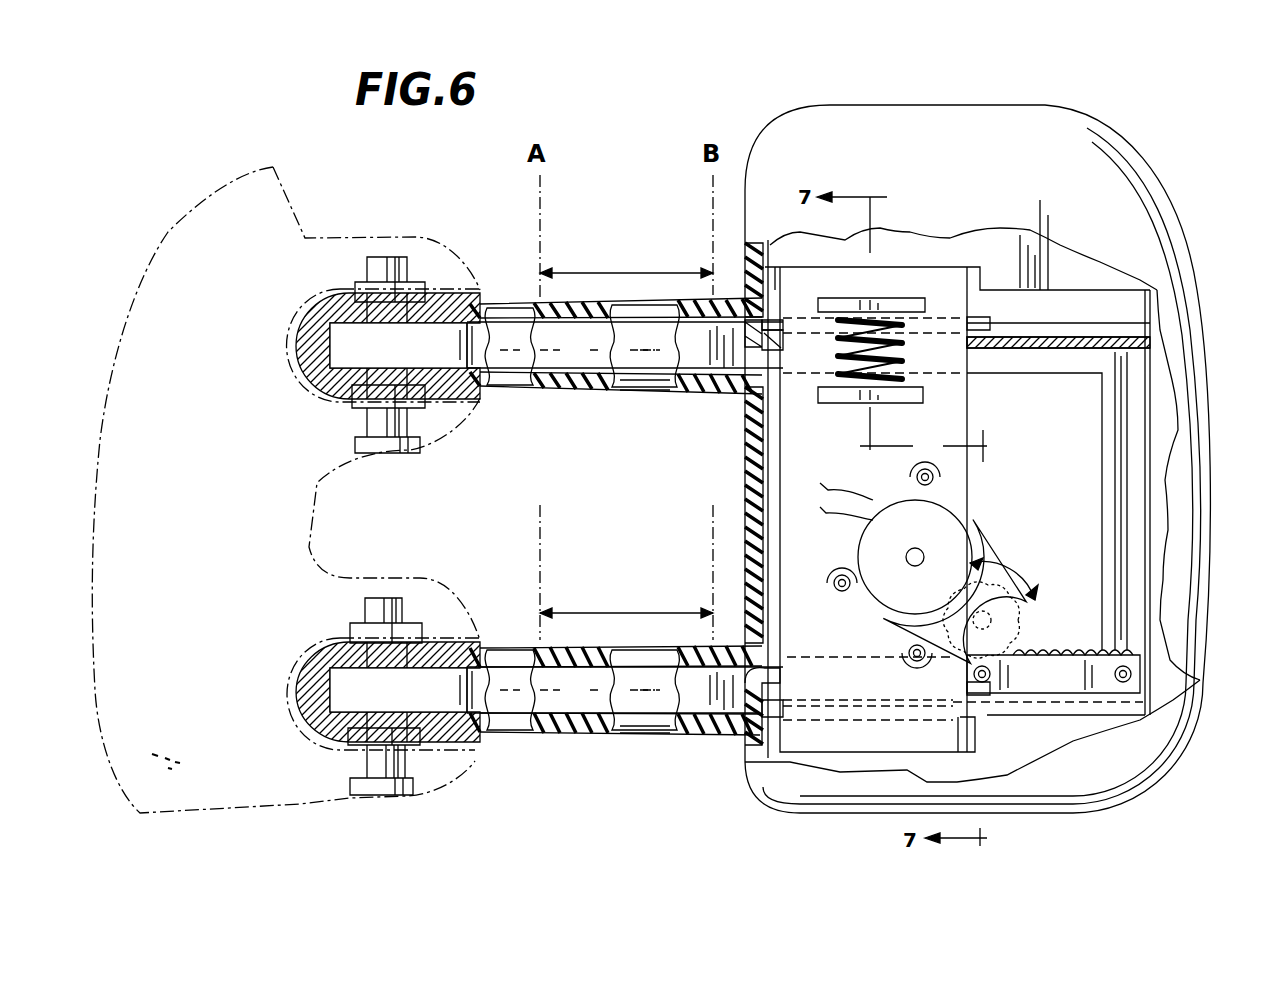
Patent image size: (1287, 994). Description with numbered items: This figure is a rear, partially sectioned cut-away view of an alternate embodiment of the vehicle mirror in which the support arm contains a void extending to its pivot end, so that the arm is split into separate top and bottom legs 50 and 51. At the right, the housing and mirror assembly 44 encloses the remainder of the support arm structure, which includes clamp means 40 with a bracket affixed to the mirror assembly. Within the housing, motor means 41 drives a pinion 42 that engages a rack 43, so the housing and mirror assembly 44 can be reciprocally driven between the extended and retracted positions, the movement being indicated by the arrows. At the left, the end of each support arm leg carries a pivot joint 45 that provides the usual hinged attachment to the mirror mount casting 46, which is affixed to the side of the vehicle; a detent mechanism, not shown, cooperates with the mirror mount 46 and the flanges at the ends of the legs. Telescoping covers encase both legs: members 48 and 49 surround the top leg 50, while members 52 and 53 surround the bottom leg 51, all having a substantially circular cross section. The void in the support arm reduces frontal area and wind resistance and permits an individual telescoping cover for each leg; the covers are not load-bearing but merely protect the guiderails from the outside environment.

The clamp means 40 is at (810, 420).
The motor means 41 is at (925, 522).
The pinion 42 is at (1000, 632).
The rack 43 is at (1130, 665).
The housing and mirror assembly 44 is at (902, 103).
The pivot joint 45 is at (405, 265).
The mirror mount casting 46 is at (286, 490).
The telescoping cover member 48 is at (664, 385).
The telescoping cover member 49 is at (500, 310).
The top leg 50 is at (582, 355).
The bottom leg 51 is at (580, 705).
The telescoping cover member 52 is at (700, 735).
The telescoping cover member 53 is at (512, 645).